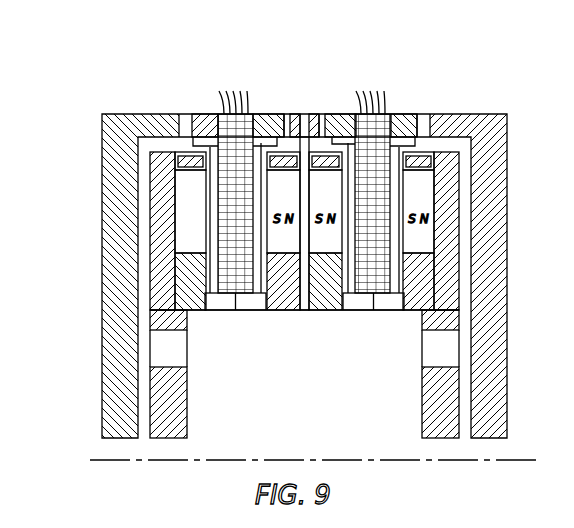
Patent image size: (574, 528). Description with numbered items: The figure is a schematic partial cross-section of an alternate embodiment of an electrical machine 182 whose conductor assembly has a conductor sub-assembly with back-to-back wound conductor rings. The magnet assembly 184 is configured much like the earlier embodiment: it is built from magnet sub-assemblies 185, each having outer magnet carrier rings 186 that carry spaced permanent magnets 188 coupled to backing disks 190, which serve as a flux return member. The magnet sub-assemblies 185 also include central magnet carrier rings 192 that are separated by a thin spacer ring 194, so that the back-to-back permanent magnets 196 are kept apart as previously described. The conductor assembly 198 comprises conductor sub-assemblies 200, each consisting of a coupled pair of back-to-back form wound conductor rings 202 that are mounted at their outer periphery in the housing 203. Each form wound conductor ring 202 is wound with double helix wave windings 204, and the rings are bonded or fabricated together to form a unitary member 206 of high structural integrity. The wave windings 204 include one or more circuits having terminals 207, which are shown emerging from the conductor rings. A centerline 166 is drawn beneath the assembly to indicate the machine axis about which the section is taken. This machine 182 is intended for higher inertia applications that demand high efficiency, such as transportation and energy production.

The electrical machine 182 is at (102, 133).
The magnet sub-assembly 185 is at (148, 182).
The permanent magnet 188 is at (175, 227).
The outer magnet carrier ring 186 is at (177, 277).
The backing disk 190 is at (150, 303).
The magnet assembly 184 is at (152, 405).
The centerline axis 166 is at (102, 460).
The terminal 207 is at (238, 92).
The form wound conductor ring 202 is at (193, 138).
The conductor assembly 198 is at (275, 138).
The back-to-back permanent magnet 196 is at (320, 180).
The conductor sub-assembly 200 is at (405, 143).
The housing 203 is at (442, 113).
The unitary member 206 is at (218, 272).
The double helix wave winding 204 is at (355, 278).
The central magnet carrier ring 192 is at (295, 310).
The spacer ring 194 is at (303, 310).